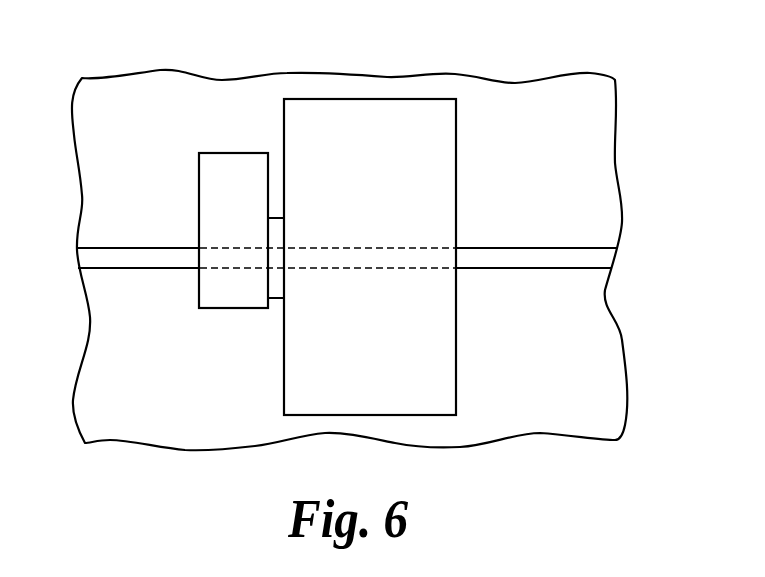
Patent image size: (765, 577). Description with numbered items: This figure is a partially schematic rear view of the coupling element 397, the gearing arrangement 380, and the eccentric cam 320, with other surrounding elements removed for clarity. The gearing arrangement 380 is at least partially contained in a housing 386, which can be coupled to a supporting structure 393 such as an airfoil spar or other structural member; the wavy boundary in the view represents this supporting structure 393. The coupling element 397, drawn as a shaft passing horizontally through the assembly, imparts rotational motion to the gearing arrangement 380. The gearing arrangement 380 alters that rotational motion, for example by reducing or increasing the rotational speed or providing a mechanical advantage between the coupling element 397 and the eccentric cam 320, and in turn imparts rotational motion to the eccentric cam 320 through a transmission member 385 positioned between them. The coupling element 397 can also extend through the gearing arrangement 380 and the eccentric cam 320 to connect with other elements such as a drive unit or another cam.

The eccentric cam 320 is at (215, 153).
The gearing arrangement 380 is at (440, 163).
The transmission member 385 is at (273, 300).
The housing 386 is at (397, 99).
The supporting structure 393 is at (535, 90).
The coupling element 397 is at (513, 245).